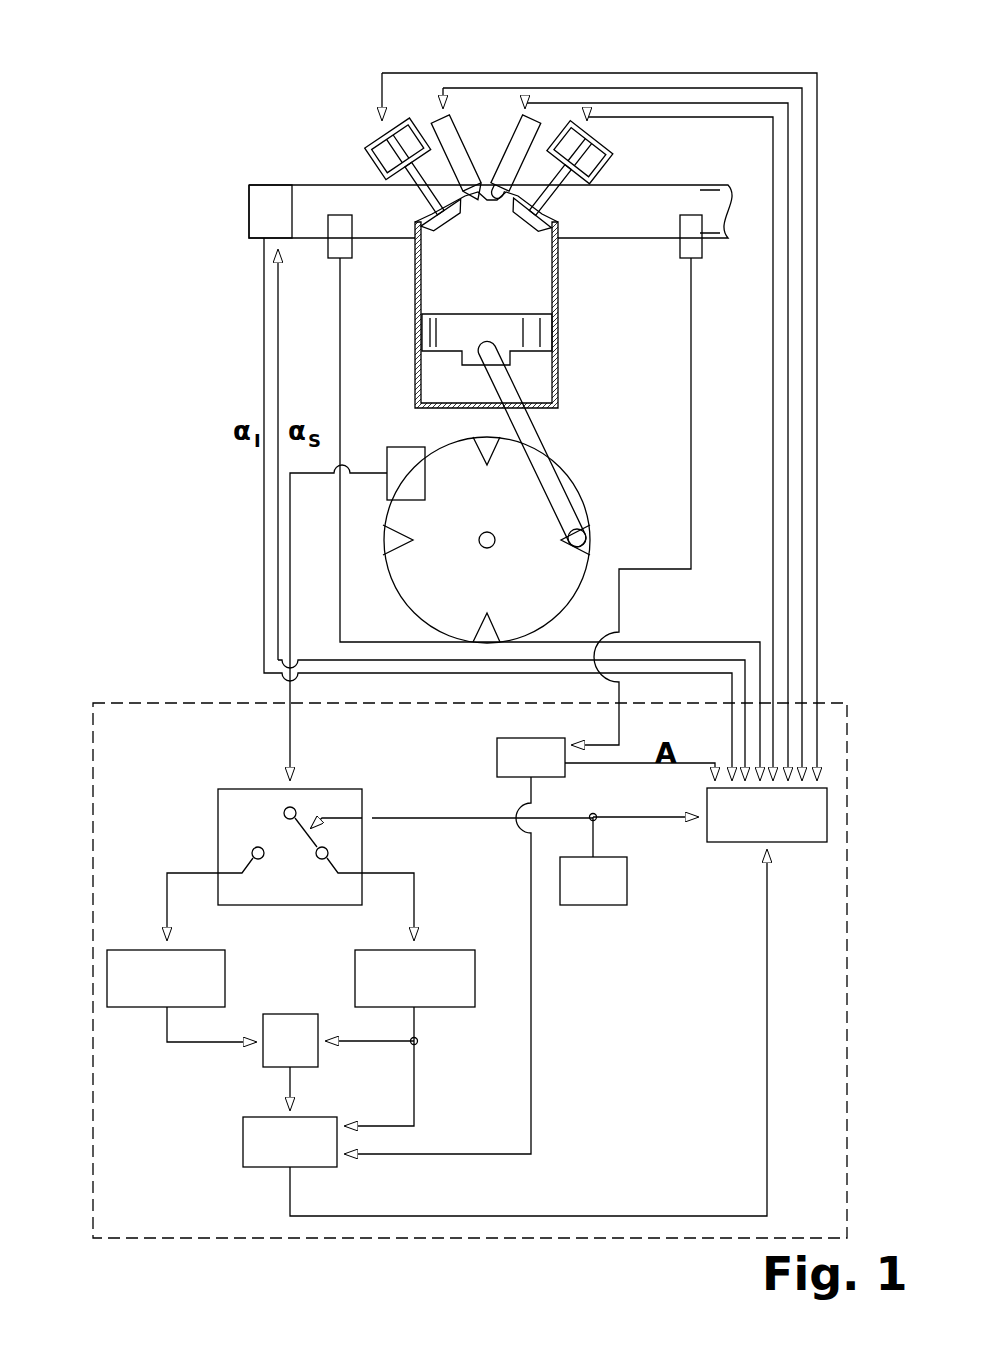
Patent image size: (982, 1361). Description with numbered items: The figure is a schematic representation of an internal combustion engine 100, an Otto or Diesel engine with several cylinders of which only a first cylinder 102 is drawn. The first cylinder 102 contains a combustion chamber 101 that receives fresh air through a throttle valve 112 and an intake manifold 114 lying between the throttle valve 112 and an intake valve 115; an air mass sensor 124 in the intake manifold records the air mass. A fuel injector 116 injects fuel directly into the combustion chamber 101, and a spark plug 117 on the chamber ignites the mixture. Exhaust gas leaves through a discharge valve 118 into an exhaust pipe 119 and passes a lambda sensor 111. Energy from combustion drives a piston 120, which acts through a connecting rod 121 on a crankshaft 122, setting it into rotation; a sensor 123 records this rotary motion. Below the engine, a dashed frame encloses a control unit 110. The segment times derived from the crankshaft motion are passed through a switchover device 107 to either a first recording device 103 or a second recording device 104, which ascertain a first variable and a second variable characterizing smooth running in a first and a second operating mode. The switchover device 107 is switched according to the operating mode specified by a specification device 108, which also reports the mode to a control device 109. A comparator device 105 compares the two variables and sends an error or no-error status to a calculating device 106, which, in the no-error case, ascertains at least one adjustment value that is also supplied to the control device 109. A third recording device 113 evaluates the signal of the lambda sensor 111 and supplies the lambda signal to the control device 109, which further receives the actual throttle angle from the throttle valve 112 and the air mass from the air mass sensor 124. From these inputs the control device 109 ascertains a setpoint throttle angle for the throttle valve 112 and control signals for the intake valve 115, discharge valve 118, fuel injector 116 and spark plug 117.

The internal combustion engine 100 is at (228, 112).
The combustion chamber 101 is at (530, 290).
The first cylinder 102 is at (415, 290).
The first recording device 103 is at (132, 950).
The second recording device 104 is at (446, 950).
The comparator device 105 is at (292, 1014).
The calculating device 106 is at (243, 1146).
The switchover device 107 is at (218, 800).
The specification device 108 is at (627, 880).
The control device 109 is at (811, 842).
The control unit 110 is at (134, 703).
The lambda sensor 111 is at (702, 260).
The throttle valve 112 is at (256, 212).
The third recording device 113 is at (497, 758).
The intake manifold 114 is at (312, 195).
The intake valve 115 is at (392, 140).
The fuel injector 116 is at (455, 118).
The spark plug 117 is at (520, 125).
The discharge valve 118 is at (600, 148).
The exhaust pipe 119 is at (712, 206).
The piston 120 is at (552, 333).
The connecting rod 121 is at (533, 426).
The crankshaft 122 is at (412, 588).
The sensor 123 is at (402, 452).
The air mass sensor 124 is at (328, 258).